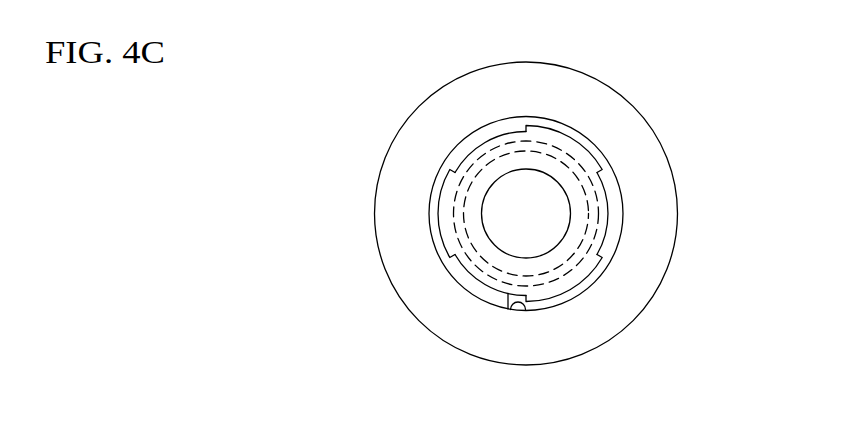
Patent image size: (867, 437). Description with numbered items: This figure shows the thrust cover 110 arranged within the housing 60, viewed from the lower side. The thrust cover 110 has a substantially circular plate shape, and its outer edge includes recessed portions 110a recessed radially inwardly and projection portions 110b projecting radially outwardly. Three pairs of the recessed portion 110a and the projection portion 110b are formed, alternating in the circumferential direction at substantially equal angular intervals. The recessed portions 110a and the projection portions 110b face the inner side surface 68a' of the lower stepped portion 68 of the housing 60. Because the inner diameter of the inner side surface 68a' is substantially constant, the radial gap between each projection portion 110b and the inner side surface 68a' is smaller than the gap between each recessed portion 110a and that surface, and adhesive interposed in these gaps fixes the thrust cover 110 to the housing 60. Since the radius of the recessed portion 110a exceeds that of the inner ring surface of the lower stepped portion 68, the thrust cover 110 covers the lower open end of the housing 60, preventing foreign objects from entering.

The housing 60 is at (655, 127).
The lower stepped portion 68 is at (606, 223).
The inner side surface 68a' is at (544, 352).
The thrust cover 110 is at (508, 291).
The recessed portion 110a is at (483, 144).
The projection portion 110b is at (563, 133).